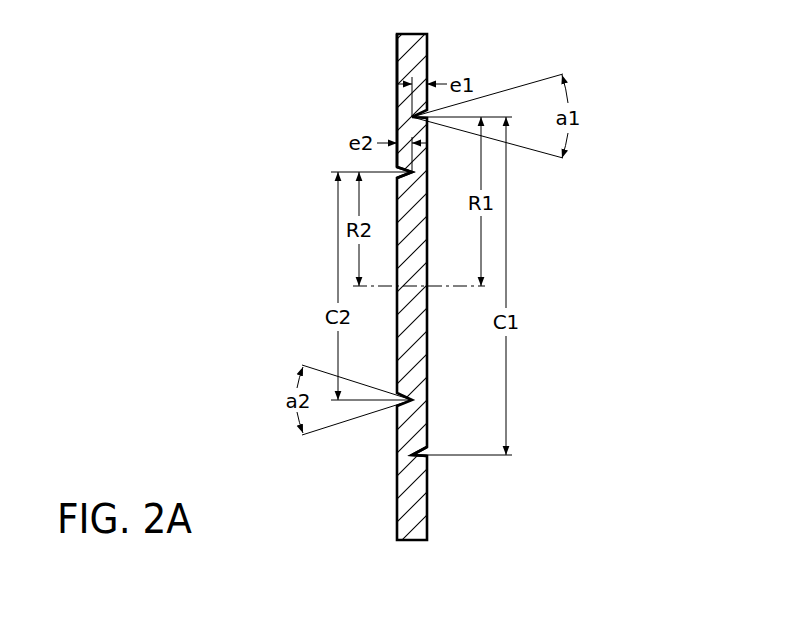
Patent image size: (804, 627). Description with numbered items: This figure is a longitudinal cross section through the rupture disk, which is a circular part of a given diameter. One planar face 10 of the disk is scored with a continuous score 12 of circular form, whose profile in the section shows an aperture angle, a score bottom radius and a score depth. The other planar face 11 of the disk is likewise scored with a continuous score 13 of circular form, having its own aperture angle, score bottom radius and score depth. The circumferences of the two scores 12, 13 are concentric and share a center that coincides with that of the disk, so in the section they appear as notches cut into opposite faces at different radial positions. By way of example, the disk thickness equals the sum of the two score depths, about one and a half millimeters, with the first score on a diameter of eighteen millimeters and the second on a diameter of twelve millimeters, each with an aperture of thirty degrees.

The planar face 10 is at (429, 50).
The other planar face 11 is at (396, 68).
The continuous score 12 is at (432, 459).
The continuous score 13 is at (396, 169).